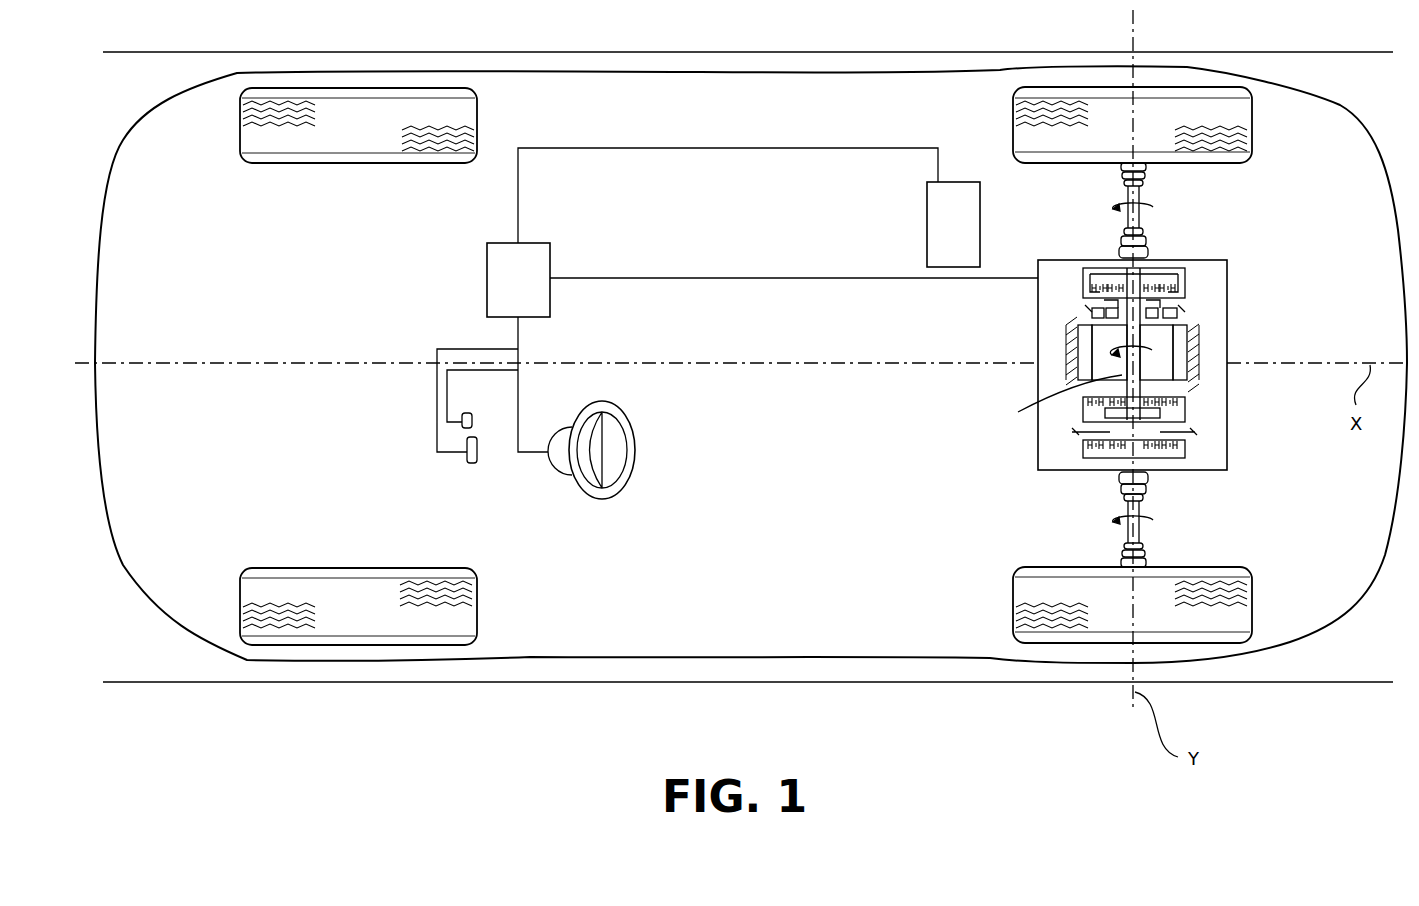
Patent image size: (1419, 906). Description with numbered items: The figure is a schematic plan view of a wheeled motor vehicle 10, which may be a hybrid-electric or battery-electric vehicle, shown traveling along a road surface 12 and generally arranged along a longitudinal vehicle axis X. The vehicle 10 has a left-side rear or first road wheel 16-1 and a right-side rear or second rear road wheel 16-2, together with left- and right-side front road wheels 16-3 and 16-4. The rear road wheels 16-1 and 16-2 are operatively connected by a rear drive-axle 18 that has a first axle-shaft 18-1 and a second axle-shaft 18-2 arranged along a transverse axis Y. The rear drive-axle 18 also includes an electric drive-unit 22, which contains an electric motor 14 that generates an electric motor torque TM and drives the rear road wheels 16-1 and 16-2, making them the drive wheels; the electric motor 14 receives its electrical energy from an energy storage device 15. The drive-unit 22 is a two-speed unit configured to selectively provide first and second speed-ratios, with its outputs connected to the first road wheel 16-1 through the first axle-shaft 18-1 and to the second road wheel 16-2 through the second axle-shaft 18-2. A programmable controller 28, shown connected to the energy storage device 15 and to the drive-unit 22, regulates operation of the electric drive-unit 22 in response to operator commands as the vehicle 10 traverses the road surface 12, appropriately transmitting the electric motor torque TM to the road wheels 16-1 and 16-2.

The motor vehicle 10 is at (697, 660).
The road surface 12 is at (130, 93).
The electric motor 14 is at (1193, 320).
The energy storage device 15 is at (942, 233).
The first road wheel 16-1 is at (1139, 625).
The second rear road wheel 16-2 is at (1144, 130).
The left-side front road wheel 16-3 is at (331, 617).
The right-side front road wheel 16-4 is at (331, 135).
The rear drive-axle 18 is at (1172, 365).
The first axle-shaft 18-1 is at (1122, 535).
The second axle-shaft 18-2 is at (1122, 196).
The electric drive-unit 22 is at (1229, 410).
The programmable controller 28 is at (530, 290).